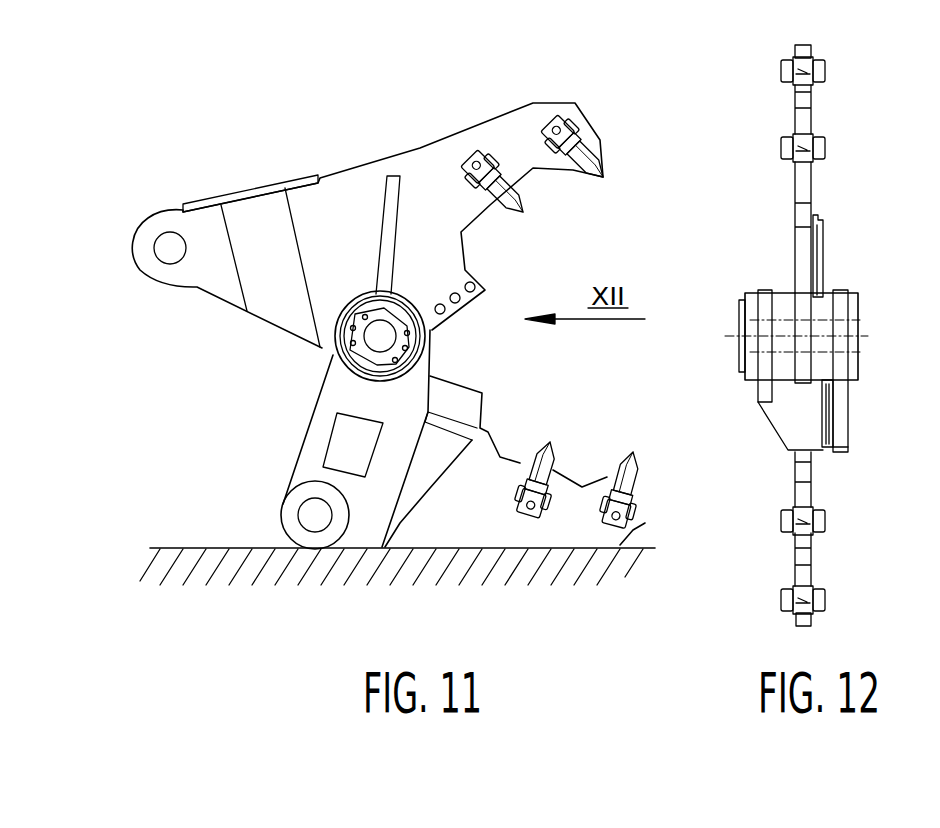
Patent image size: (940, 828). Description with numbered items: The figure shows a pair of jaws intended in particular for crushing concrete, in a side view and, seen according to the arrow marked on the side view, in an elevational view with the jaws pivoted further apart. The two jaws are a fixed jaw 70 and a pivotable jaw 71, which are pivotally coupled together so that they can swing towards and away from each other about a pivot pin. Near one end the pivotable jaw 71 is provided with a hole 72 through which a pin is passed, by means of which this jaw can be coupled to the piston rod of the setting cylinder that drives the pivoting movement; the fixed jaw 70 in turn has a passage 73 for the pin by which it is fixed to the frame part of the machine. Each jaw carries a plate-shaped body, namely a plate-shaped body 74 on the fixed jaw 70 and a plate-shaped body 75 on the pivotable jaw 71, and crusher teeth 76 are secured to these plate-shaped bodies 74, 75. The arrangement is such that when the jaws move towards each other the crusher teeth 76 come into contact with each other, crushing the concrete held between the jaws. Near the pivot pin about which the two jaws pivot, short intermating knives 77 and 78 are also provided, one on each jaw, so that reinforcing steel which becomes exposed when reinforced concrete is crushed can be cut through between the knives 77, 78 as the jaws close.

In FIG. 11, the fixed jaw 70 is at (270, 462).
In FIG. 12, the fixed jaw 70 is at (760, 551).
In FIG. 11, the pivotable jaw 71 is at (313, 150).
In FIG. 12, the pivotable jaw 71 is at (761, 113).
In FIG. 11, the hole 72 is at (170, 252).
In FIG. 11, the passage 73 is at (310, 515).
In FIG. 11, the plate-shaped body 74 is at (471, 528).
In FIG. 12, the plate-shaped body 74 is at (804, 492).
In FIG. 11, the plate-shaped body 75 is at (430, 157).
In FIG. 12, the plate-shaped body 75 is at (806, 192).
In FIG. 11, the crusher teeth 76 is at (607, 174).
In FIG. 12, the crusher teeth 76 is at (812, 76).
In FIG. 12, the knife 77 is at (820, 258).
In FIG. 12, the knife 78 is at (827, 418).